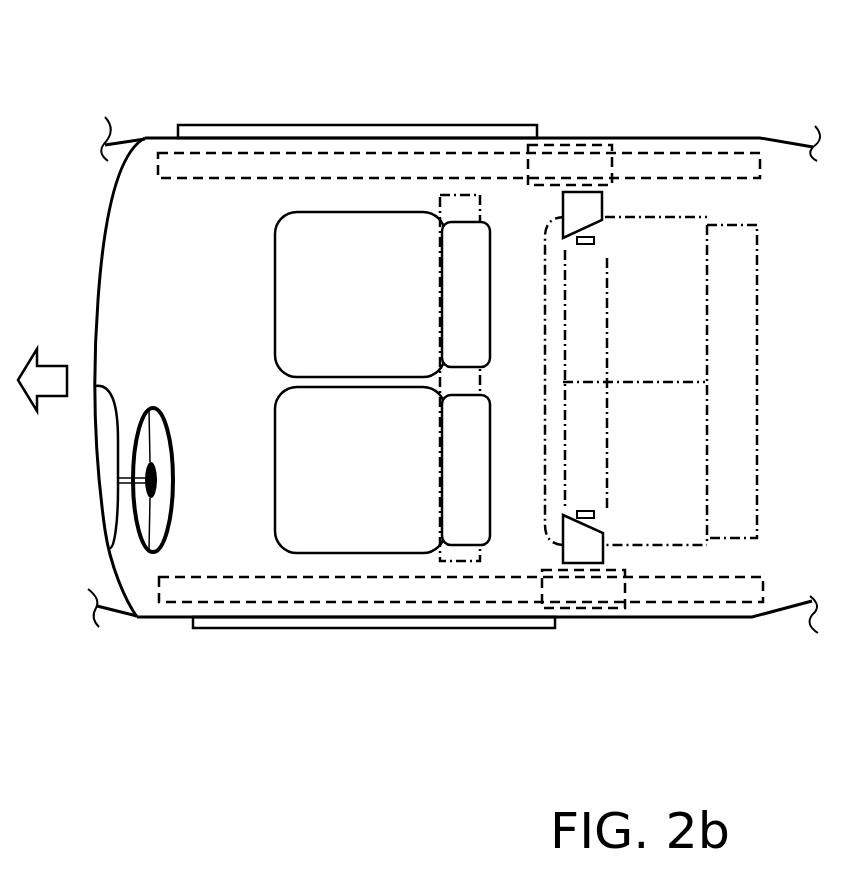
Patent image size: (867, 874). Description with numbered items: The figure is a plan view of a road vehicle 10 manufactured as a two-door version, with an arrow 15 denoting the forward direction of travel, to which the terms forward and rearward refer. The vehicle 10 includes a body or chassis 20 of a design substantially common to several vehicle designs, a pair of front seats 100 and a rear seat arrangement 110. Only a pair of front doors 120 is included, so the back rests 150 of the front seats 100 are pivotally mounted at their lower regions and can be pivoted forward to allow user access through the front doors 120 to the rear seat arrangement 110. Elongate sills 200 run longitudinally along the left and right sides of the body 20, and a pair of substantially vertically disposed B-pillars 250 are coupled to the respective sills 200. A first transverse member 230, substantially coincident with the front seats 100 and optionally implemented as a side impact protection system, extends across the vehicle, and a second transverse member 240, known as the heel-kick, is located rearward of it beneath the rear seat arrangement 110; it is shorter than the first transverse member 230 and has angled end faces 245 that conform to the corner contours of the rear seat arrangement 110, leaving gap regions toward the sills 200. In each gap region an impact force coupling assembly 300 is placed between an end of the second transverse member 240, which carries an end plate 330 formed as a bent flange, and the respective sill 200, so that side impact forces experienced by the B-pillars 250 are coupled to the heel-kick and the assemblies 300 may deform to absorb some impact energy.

The road vehicle 10 is at (174, 58).
The arrow 15 is at (53, 380).
The body or chassis 20 is at (160, 327).
The front seats 100 is at (395, 334).
The rear seat arrangement 110 is at (680, 366).
The front doors 120 is at (237, 125).
The back rests 150 is at (465, 243).
The sills 200 is at (657, 170).
The first transverse member 230 is at (453, 207).
The second transverse member 240 is at (607, 263).
The angled end faces 245 is at (602, 240).
The B-pillars 250 is at (574, 185).
The impact force coupling assemblies 300 is at (586, 208).
The end plate 330 is at (600, 234).